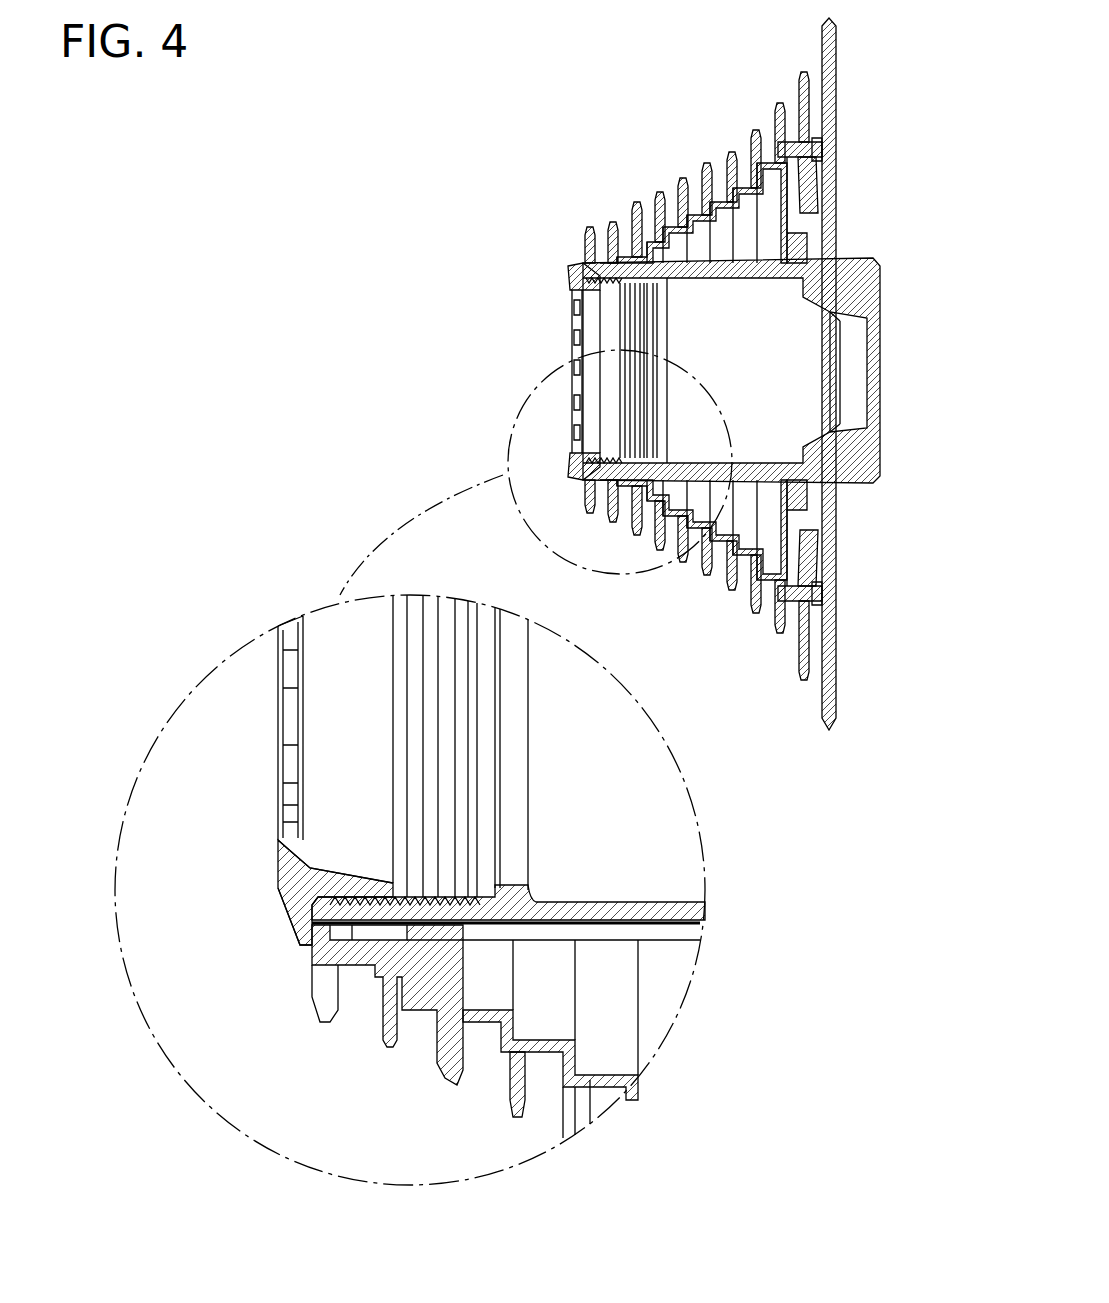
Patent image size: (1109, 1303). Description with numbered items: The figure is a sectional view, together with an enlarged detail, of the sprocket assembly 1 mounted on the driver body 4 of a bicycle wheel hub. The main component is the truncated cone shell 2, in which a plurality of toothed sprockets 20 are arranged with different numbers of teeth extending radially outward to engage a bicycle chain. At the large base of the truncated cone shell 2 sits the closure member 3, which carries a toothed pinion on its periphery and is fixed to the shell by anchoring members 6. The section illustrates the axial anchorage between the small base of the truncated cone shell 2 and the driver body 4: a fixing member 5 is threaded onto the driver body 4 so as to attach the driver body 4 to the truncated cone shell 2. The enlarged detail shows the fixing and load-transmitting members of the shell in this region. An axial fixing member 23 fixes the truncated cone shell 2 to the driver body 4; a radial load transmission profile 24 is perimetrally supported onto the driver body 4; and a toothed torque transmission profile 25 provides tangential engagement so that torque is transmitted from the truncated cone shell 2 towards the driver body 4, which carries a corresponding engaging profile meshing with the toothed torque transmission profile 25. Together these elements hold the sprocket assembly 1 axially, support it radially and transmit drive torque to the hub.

The sprocket assembly 1 is at (425, 410).
The truncated cone shell 2 is at (733, 213).
The closure member 3 is at (803, 107).
The driver body 4 is at (620, 272).
The fixing member 5 is at (577, 283).
The anchoring members 6 is at (823, 177).
The toothed sprockets 20 is at (455, 1080).
The axial fixing member 23 is at (298, 940).
The radial load transmission profile 24 is at (305, 858).
The toothed torque transmission profile 25 is at (432, 918).